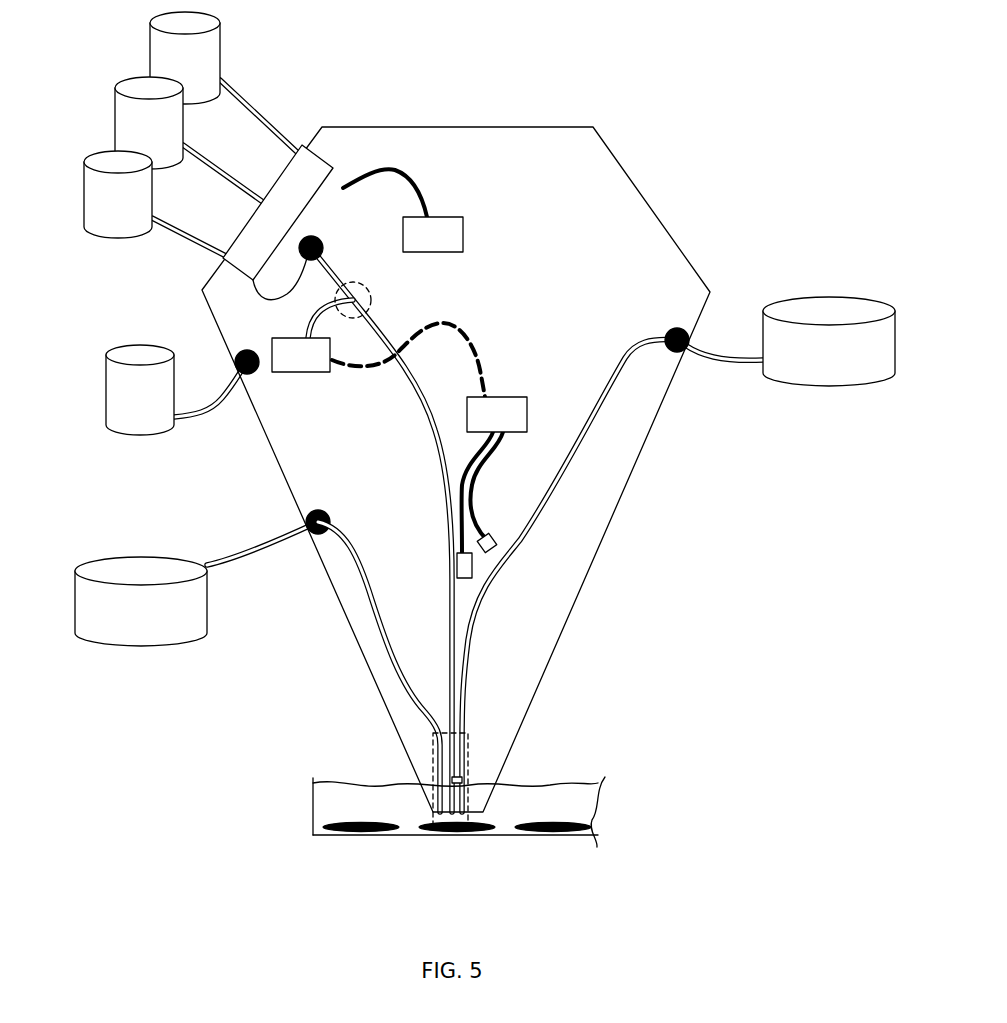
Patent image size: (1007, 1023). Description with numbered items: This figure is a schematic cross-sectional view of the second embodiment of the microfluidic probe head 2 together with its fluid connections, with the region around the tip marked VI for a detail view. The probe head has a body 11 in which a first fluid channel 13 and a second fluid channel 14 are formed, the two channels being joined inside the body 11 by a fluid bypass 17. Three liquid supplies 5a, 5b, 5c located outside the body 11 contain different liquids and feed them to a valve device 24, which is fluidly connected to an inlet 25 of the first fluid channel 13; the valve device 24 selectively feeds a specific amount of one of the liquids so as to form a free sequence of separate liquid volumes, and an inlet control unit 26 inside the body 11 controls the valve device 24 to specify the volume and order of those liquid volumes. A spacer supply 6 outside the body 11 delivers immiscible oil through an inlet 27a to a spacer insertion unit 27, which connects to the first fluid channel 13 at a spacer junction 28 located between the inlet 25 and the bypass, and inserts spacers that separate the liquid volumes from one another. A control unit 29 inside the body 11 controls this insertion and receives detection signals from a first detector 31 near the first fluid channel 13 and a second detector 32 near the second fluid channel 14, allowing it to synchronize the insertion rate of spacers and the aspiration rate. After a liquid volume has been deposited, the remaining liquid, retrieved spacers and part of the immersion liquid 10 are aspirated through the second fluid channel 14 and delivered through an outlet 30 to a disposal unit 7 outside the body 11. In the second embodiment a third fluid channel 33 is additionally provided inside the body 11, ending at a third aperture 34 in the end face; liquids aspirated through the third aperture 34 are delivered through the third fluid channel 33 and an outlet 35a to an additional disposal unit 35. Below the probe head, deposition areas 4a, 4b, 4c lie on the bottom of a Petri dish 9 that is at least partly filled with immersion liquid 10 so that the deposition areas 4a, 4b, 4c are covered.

The microfluidic probe head 2 is at (457, 423).
The deposition area 4a is at (357, 833).
The deposition area 4b is at (432, 835).
The deposition area 4c is at (552, 833).
The liquid supply 5a is at (165, 63).
The liquid supply 5b is at (123, 125).
The liquid supply 5c is at (102, 213).
The spacer supply 6 is at (122, 395).
The disposal unit 7 is at (827, 313).
The Petri dish 9 is at (313, 820).
The immersion liquid 10 is at (508, 814).
The body 11 is at (610, 148).
The first fluid channel 13 is at (430, 408).
The second fluid channel 14 is at (573, 463).
The fluid bypass 17 is at (455, 780).
The valve device 24 is at (310, 167).
The inlet 25 is at (236, 284).
The inlet control unit 26 is at (438, 227).
The spacer insertion unit 27 is at (297, 365).
The inlet 27a is at (238, 360).
The spacer junction 28 is at (357, 313).
The control unit 29 is at (500, 397).
The outlet 30 is at (688, 353).
The first detector 31 is at (478, 572).
The second detector 32 is at (497, 547).
The third fluid channel 33 is at (372, 597).
The third aperture 34 is at (443, 816).
The additional disposal unit 35 is at (147, 620).
The outlet 35a is at (318, 534).
The detail region of FIG. 6 VI is at (470, 762).